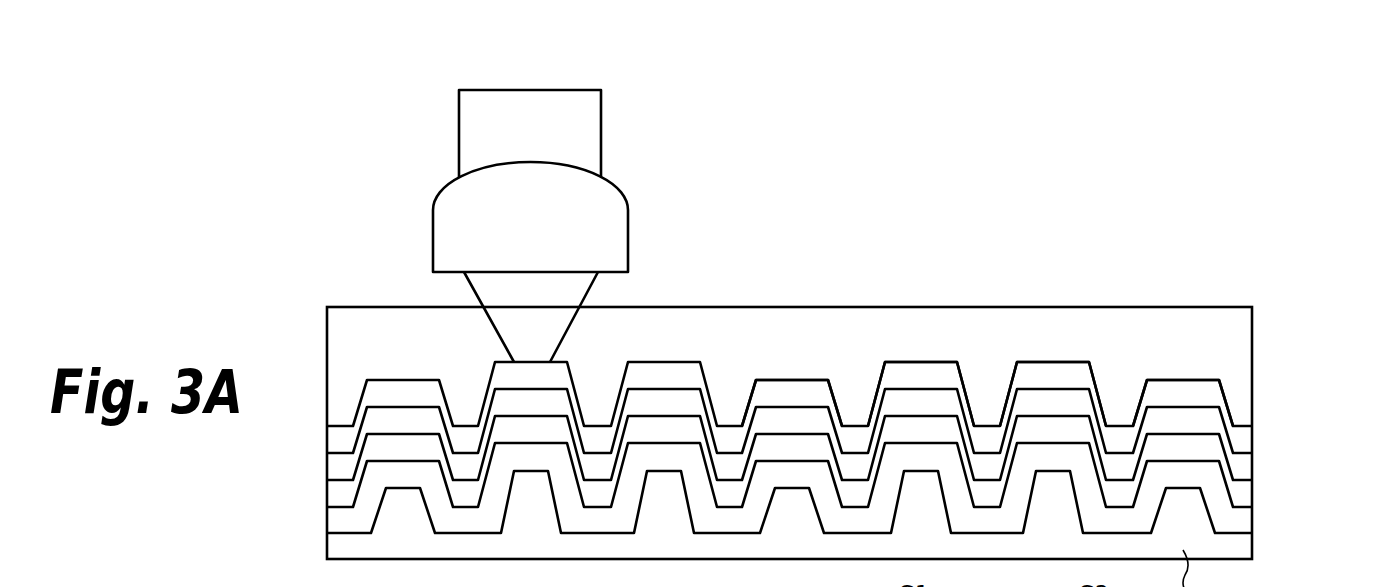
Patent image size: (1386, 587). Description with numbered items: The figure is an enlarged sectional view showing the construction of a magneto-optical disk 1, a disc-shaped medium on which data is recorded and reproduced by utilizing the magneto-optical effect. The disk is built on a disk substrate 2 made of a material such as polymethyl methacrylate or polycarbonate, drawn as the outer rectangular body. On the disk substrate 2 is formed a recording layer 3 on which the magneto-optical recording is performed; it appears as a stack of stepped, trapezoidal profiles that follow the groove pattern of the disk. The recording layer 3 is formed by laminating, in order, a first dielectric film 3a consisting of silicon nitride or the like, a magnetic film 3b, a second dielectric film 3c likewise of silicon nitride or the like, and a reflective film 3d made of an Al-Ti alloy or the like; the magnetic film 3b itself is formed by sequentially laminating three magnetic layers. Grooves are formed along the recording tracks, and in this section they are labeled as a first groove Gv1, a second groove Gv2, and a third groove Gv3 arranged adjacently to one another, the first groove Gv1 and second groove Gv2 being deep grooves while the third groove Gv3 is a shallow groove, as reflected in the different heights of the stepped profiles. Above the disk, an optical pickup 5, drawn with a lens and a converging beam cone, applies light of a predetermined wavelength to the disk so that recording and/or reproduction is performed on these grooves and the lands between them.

The magneto-optical disk 1 is at (851, 378).
The disk substrate 2 is at (1244, 329).
The recording layer 3 is at (851, 452).
The first dielectric film 3a is at (1238, 452).
The magnetic film 3b is at (1238, 479).
The second dielectric film 3c is at (1238, 506).
The reflective film 3d is at (819, 504).
The optical pickup 5 is at (628, 212).
The first groove Gv1 is at (926, 362).
The second groove Gv2 is at (1052, 362).
The third groove Gv3 is at (798, 378).